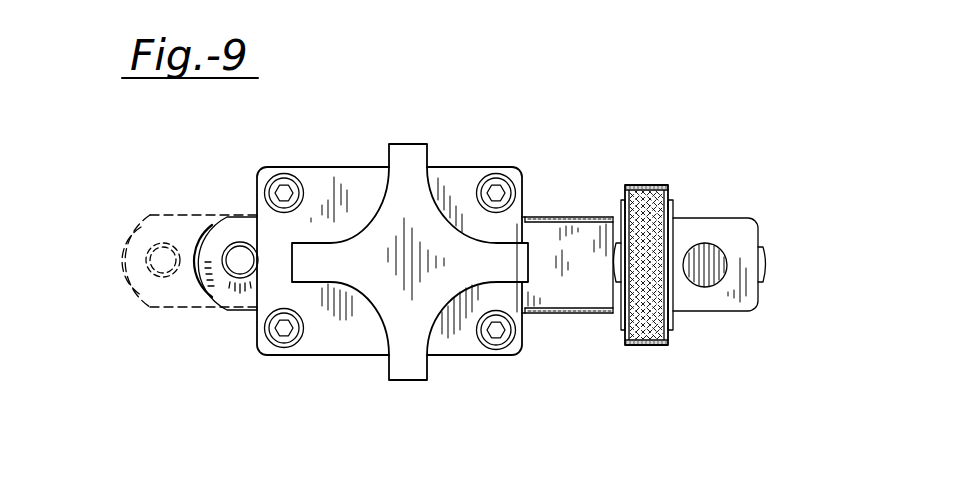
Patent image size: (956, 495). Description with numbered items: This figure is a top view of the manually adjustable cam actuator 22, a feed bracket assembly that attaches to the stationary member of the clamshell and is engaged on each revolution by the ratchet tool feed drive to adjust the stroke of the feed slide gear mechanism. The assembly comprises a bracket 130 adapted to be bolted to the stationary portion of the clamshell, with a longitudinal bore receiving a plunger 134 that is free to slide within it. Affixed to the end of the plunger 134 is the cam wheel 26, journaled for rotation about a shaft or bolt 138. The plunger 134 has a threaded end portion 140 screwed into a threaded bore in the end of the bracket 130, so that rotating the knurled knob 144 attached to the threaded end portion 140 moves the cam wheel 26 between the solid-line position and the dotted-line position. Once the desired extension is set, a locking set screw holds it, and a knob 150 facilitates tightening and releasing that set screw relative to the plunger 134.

The manually adjustable cam actuator 22 is at (330, 360).
The cam wheel 26 is at (126, 273).
The bracket 130 is at (310, 177).
The plunger 134 is at (547, 230).
The shaft (bolt) 138 is at (240, 241).
The threaded end portion 140 is at (767, 265).
The knurled knob 144 is at (638, 187).
The knob 150 is at (427, 145).